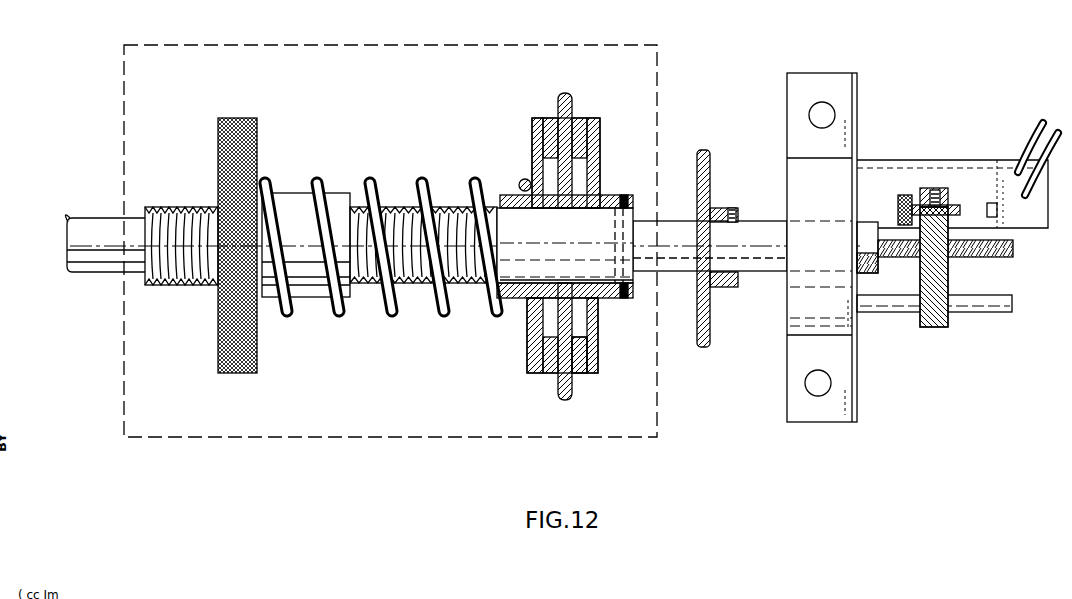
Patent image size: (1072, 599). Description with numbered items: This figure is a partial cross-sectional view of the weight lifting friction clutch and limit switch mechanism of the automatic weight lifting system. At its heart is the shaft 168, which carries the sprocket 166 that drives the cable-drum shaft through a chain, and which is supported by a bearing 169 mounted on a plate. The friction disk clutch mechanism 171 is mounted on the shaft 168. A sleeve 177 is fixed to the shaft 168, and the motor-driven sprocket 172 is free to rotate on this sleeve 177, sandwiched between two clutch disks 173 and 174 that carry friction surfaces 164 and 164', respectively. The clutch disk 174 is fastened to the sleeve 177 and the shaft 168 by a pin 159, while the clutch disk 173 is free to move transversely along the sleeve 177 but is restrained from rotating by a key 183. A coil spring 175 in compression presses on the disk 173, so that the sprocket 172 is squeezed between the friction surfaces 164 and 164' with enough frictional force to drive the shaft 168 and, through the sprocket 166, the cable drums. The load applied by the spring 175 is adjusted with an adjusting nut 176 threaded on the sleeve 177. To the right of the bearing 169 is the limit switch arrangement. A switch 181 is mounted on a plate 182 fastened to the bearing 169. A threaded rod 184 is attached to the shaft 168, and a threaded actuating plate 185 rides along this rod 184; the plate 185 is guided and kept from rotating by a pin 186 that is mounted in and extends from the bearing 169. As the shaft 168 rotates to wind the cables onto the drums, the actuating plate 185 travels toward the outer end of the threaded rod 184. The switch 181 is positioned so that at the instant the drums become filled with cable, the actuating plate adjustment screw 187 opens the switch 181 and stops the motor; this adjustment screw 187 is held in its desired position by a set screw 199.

The pin 159 is at (612, 300).
The friction surface 164 is at (541, 347).
The friction surface 164' is at (594, 374).
The sprocket 166 is at (712, 198).
The shaft 168 is at (100, 276).
The bearing 169 is at (820, 88).
The friction disk clutch mechanism 171 is at (396, 46).
The sprocket 172 is at (558, 100).
The clutch disk 173 is at (532, 325).
The clutch disk 174 is at (598, 352).
The coil spring 175 is at (340, 316).
The adjusting nut 176 is at (232, 374).
The sleeve 177 is at (178, 286).
The switch 181 is at (995, 178).
The plate 182 is at (908, 165).
The key 183 is at (512, 196).
The threaded rod 184 is at (1013, 256).
The actuating plate 185 is at (948, 282).
The pin 186 is at (1012, 305).
The actuating plate adjustment screw 187 is at (900, 202).
The set screw 199 is at (937, 188).